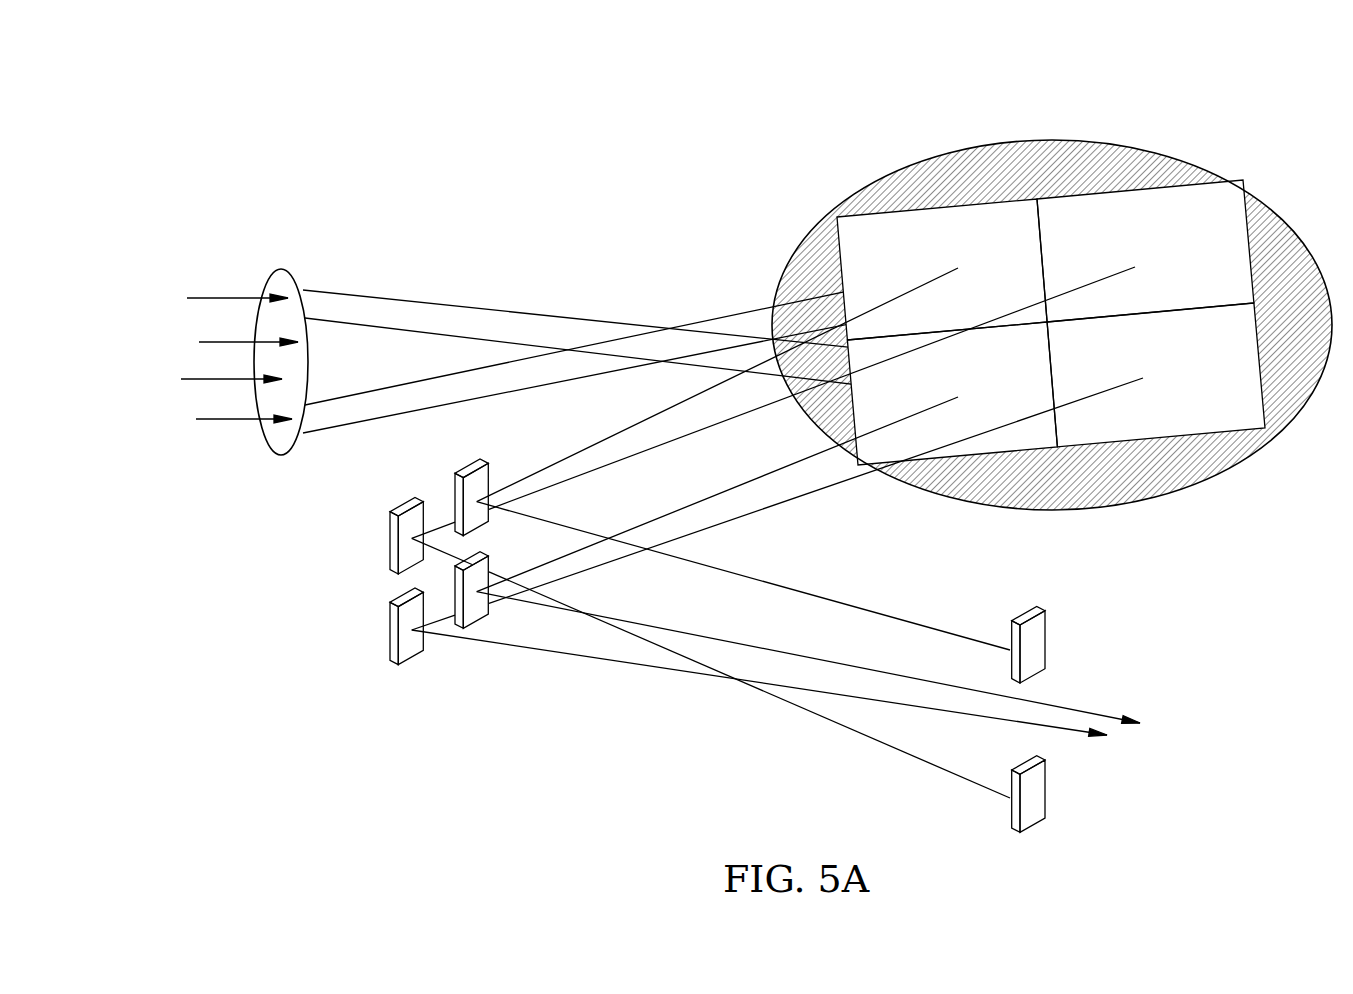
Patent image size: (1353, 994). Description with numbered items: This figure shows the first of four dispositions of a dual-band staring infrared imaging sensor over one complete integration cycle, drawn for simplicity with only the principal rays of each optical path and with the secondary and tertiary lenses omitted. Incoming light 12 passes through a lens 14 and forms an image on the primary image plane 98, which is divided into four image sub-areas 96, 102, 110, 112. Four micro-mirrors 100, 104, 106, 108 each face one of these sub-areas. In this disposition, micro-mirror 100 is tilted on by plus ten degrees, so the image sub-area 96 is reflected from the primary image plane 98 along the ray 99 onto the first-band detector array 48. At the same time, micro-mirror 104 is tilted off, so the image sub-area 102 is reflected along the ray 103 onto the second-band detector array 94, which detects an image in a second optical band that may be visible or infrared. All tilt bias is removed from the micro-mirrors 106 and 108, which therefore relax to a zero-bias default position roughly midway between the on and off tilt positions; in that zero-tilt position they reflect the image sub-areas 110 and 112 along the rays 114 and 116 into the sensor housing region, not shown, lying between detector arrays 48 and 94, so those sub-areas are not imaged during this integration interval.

The incident light beams 12 is at (206, 299).
The lens 14 is at (283, 268).
The first-band detector array 48 is at (1019, 620).
The second detector array 94 is at (1035, 830).
The image sub-area 96 is at (873, 230).
The primary image plane 98 is at (1036, 140).
The ray 99 is at (832, 598).
The micro-mirror 100 is at (471, 459).
The image sub-area 102 is at (1175, 212).
The ray 103 is at (833, 722).
The micro-mirror 104 is at (403, 507).
The micro-mirror 106 is at (417, 664).
The micro-mirror 108 is at (478, 621).
The image sub-area 110 is at (996, 443).
The image sub-area 112 is at (1173, 418).
The ray 114 is at (1100, 710).
The ray 116 is at (1027, 728).